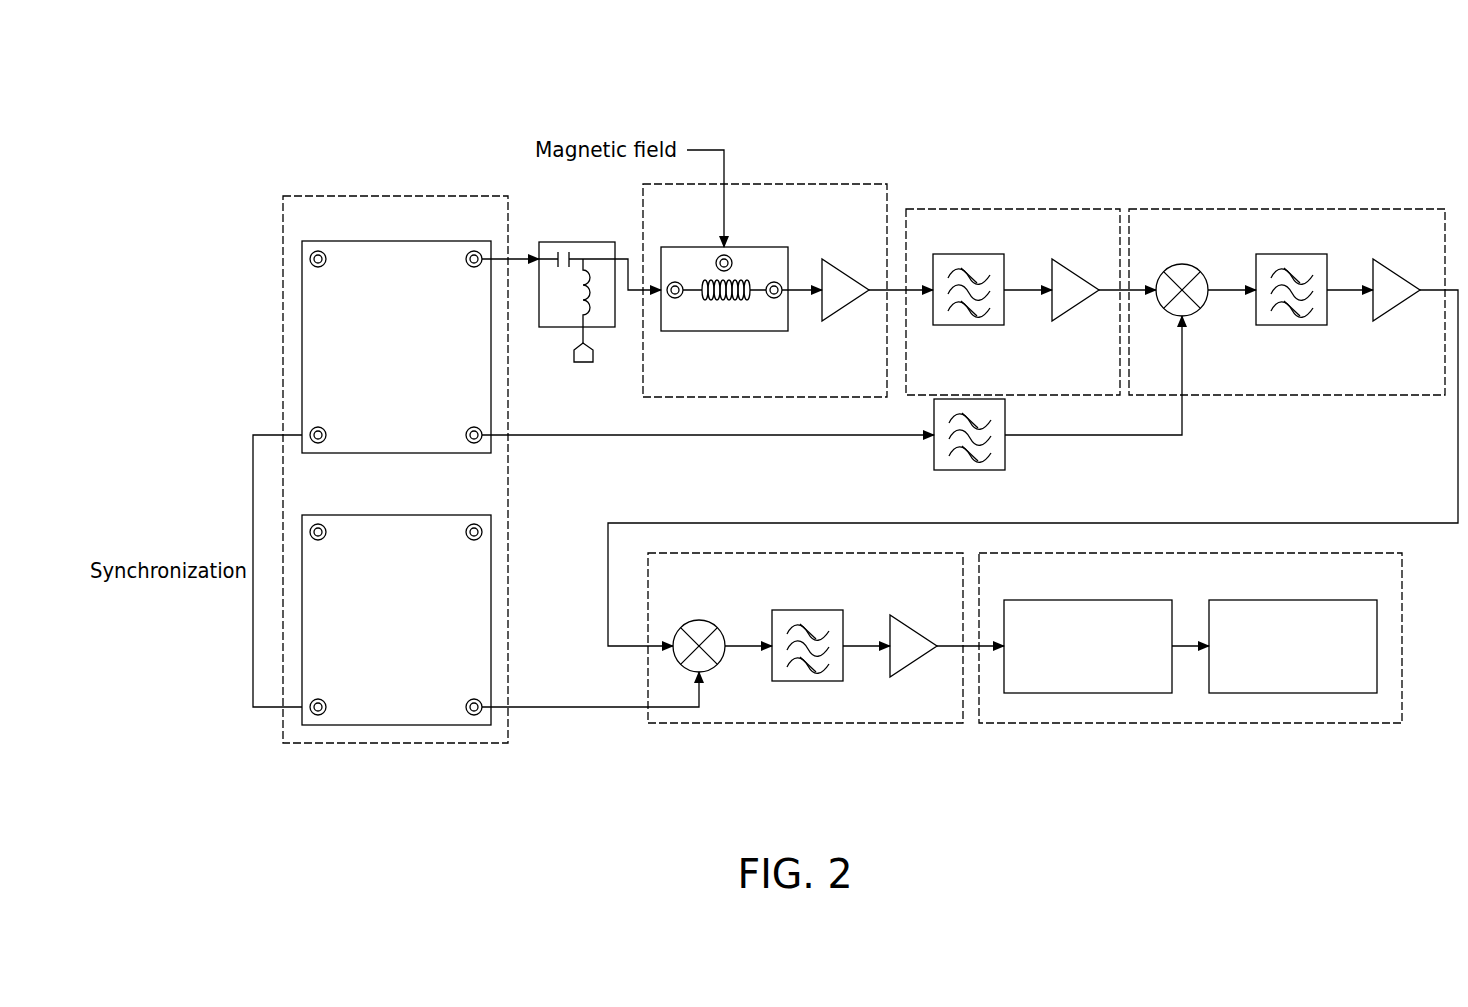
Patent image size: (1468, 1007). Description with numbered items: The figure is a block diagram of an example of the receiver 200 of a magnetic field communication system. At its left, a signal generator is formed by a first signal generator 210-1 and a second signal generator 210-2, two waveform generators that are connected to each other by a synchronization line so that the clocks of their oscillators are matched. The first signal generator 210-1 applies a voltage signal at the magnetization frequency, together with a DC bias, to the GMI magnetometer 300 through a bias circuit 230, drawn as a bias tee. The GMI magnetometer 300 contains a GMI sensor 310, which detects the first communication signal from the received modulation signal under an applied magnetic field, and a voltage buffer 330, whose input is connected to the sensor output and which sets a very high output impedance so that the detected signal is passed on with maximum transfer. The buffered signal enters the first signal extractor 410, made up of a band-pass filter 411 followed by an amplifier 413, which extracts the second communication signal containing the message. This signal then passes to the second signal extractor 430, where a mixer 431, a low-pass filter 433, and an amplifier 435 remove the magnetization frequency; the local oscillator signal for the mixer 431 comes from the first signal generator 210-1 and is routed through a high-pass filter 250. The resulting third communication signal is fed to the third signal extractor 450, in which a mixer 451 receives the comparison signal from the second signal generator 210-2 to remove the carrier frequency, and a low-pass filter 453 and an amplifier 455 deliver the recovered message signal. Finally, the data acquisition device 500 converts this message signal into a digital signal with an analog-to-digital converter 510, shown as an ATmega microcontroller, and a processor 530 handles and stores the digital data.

The receiver 200 is at (1388, 100).
The first signal generator 210-1 is at (398, 241).
The second signal generator 210-2 is at (397, 515).
The bias circuit 230 is at (574, 242).
The high-pass filter 250 is at (1005, 457).
The GMI magnetometer 300 is at (765, 184).
The GMI sensor 310 is at (756, 247).
The voltage buffer 330 is at (846, 268).
The first signal extractor 410 is at (1013, 209).
The band-pass filter 411 is at (970, 254).
The amplifier 413 is at (1078, 270).
The second signal extractor 430 is at (1287, 209).
The mixer 431 is at (1205, 272).
The low-pass filter 433 is at (1292, 254).
The amplifier 435 is at (1398, 270).
The third signal extractor 450 is at (807, 723).
The mixer 451 is at (722, 627).
The low-pass filter 453 is at (808, 610).
The amplifier 455 is at (915, 626).
The data acquisition device 500 is at (1190, 723).
The analog-to-digital converter 510 is at (1087, 600).
The processor 530 is at (1293, 600).